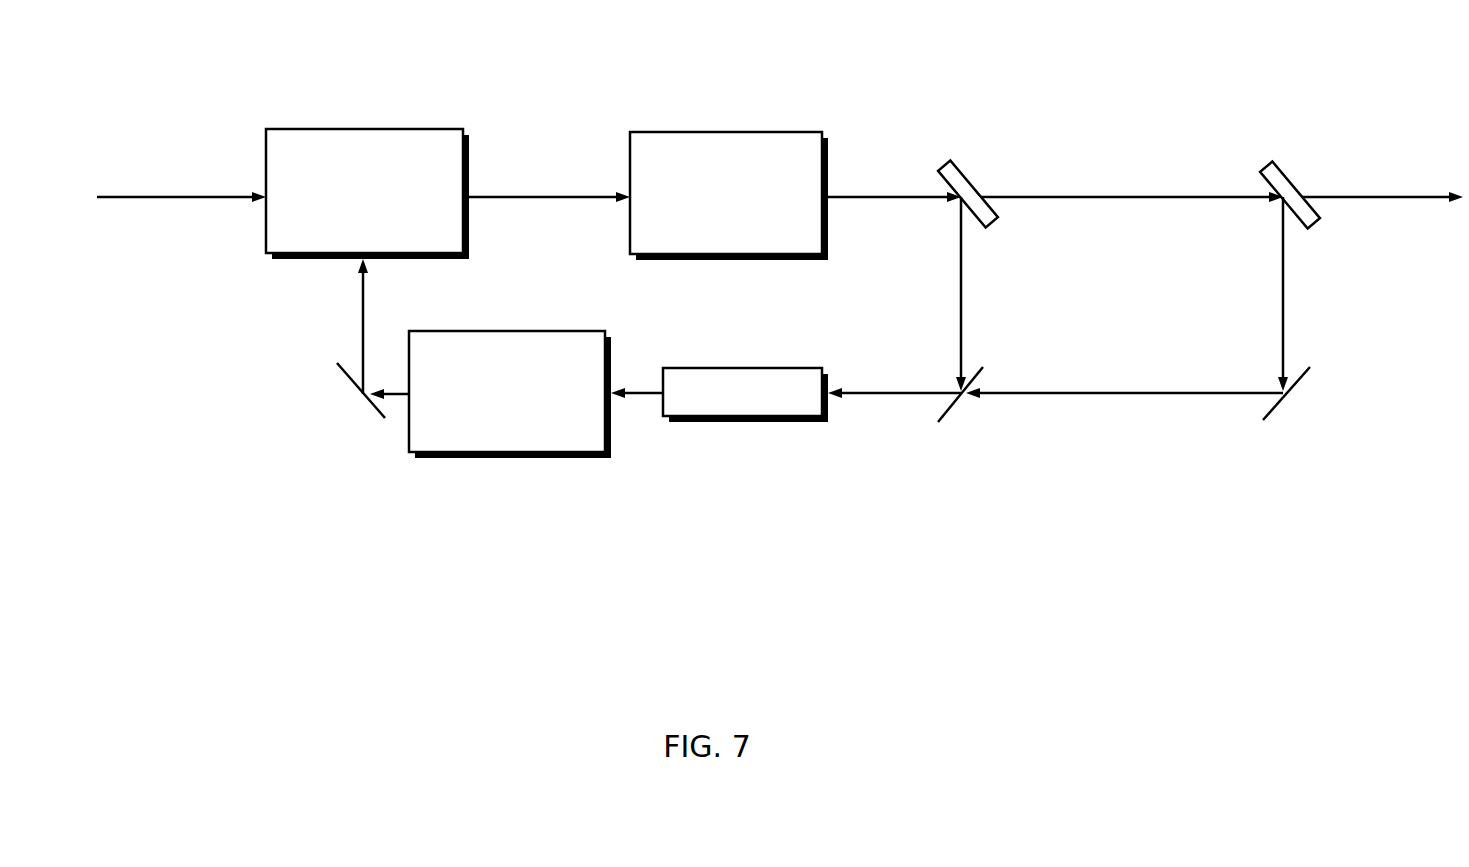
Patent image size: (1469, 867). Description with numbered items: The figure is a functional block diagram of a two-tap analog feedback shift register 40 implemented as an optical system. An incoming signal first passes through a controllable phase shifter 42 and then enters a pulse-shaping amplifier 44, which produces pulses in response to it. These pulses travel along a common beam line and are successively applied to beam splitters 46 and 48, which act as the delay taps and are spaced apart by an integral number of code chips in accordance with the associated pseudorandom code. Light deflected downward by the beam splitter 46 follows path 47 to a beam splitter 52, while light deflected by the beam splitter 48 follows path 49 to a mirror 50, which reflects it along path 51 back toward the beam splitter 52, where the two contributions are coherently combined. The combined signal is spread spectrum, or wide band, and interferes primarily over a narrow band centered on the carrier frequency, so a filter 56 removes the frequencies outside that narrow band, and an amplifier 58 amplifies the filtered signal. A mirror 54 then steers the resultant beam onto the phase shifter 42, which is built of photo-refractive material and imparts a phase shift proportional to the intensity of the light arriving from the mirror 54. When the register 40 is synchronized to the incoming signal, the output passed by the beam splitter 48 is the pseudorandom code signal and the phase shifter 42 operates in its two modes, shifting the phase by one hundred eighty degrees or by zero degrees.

The two-tap AFSR 40 is at (1048, 65).
The controllable phase shifter 42 is at (357, 129).
The pulse-shaping amplifier 44 is at (705, 132).
The beam splitter 46 is at (975, 183).
The path 47 is at (961, 298).
The beam splitter 48 is at (1296, 188).
The path 49 is at (1284, 298).
The mirror 50 is at (1280, 411).
The path 51 is at (1100, 395).
The beam splitter 52 is at (945, 425).
The mirror 54 is at (372, 412).
The filter 56 is at (752, 422).
The amplifier 58 is at (503, 458).